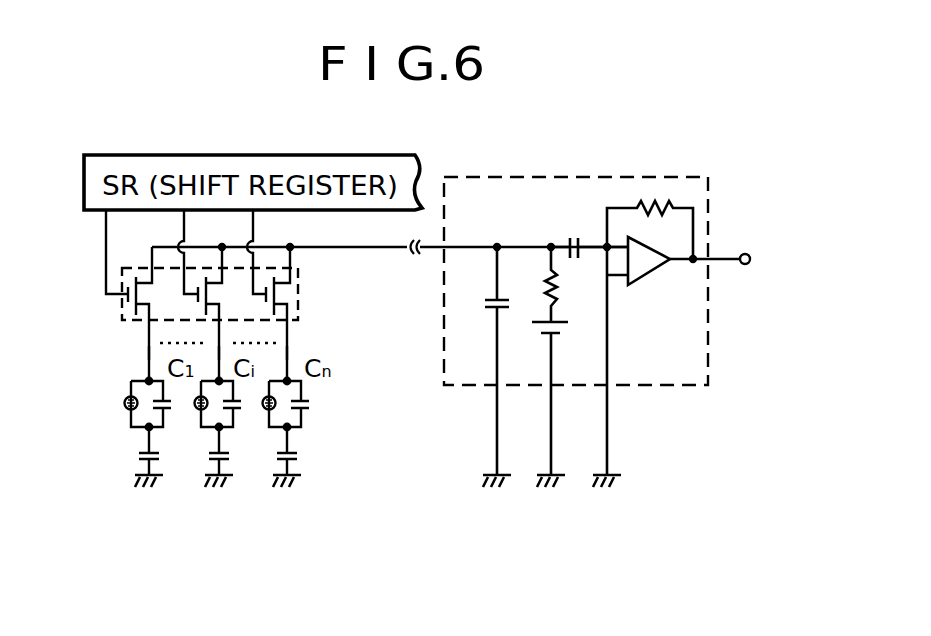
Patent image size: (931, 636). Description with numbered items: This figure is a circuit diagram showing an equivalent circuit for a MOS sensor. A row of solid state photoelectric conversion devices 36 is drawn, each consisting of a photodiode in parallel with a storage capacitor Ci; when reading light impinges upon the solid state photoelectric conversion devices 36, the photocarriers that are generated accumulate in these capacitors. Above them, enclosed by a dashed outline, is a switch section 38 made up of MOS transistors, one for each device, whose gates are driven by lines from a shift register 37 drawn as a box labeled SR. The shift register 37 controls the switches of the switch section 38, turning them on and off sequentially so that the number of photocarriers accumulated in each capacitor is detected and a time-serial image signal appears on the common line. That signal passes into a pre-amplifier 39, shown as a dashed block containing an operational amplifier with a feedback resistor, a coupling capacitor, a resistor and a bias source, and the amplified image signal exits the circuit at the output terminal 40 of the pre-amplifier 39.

The solid state photoelectric conversion device 36 is at (122, 435).
The shift register 37 is at (93, 212).
The switch section 38 is at (122, 312).
The pre-amplifier 39 is at (655, 386).
The output terminal 40 is at (750, 260).